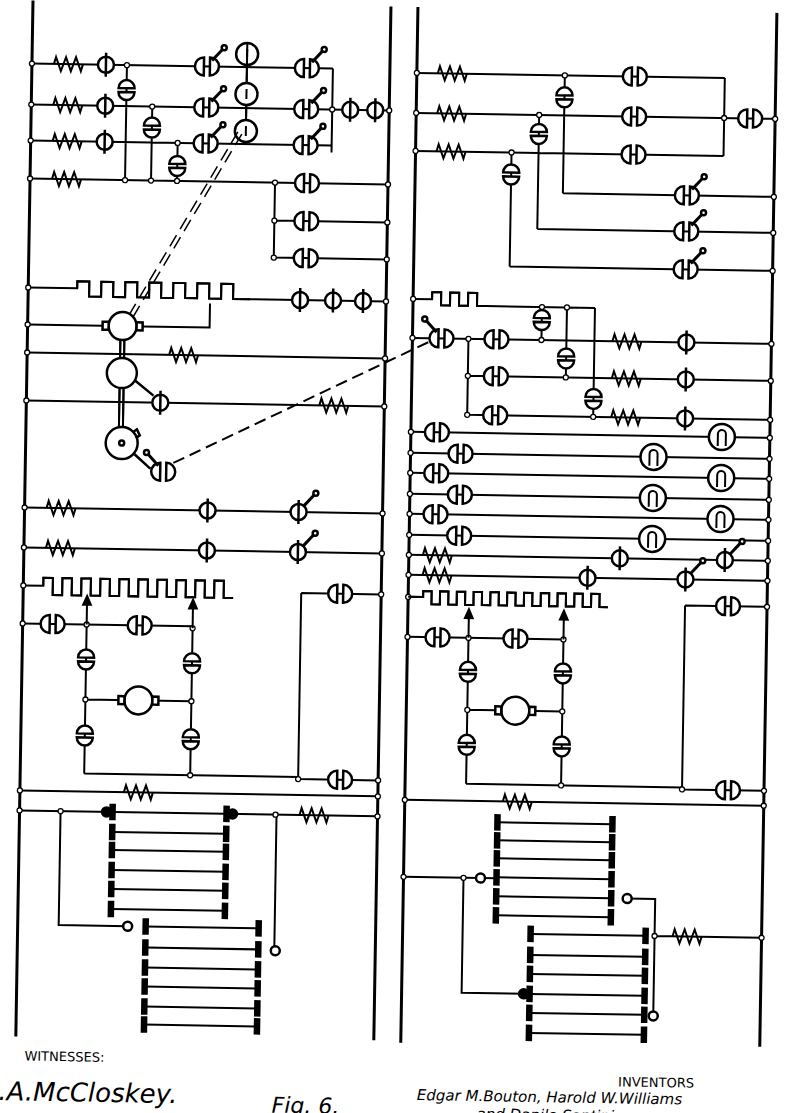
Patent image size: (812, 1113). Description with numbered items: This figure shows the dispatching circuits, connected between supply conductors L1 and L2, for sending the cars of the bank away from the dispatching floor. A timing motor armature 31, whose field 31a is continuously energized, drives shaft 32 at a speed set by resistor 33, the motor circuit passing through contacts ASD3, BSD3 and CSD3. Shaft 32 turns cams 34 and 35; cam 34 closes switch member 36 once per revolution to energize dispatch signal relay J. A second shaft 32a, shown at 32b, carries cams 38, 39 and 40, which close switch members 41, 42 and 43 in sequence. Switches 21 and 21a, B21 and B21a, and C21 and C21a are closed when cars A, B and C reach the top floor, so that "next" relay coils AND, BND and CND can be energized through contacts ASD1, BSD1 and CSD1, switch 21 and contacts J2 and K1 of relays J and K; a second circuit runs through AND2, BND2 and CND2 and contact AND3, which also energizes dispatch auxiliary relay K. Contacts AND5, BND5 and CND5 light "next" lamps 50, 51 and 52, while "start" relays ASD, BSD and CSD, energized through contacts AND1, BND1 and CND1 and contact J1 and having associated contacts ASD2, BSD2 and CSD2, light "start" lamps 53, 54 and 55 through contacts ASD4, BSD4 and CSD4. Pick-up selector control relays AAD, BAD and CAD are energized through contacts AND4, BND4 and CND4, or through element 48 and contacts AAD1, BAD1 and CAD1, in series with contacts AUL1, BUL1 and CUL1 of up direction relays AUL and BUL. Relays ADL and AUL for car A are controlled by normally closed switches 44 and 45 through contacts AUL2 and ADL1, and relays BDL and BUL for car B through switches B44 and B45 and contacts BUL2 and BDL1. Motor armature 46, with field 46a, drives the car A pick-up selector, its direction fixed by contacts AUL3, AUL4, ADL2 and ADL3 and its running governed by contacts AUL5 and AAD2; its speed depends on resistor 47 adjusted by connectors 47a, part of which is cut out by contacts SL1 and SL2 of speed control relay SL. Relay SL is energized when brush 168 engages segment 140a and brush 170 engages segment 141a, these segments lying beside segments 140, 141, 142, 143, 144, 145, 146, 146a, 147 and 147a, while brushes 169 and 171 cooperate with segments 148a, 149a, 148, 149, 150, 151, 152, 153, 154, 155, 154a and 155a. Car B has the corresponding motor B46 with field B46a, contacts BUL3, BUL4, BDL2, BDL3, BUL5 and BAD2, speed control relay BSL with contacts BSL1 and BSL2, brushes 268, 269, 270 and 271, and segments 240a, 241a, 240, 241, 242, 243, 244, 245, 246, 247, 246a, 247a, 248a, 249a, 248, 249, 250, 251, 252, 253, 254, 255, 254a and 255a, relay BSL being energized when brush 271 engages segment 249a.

The supply line L1 is at (229, 526).
The supply line L2 is at (553, 533).
The switch 21 is at (311, 58).
The motor 31 is at (132, 323).
The resistor 31a is at (198, 351).
The shaft 32 is at (122, 350).
The connection 32a is at (185, 225).
The shaft 32b is at (266, 94).
The coil 33 is at (164, 280).
The cam 34 is at (110, 376).
The cam 35 is at (112, 441).
The contact 36 is at (174, 398).
The dial 38 is at (256, 126).
The dial 39 is at (256, 90).
The dial 40 is at (250, 38).
The switch 41 is at (199, 136).
The switch 42 is at (195, 100).
The switch 43 is at (204, 58).
The switch 44 is at (291, 504).
The switch 45 is at (286, 545).
The motor 46 is at (138, 692).
The resistor 46a is at (153, 790).
The coil 47 is at (138, 579).
The armature 47a is at (155, 612).
The coil 48 is at (510, 441).
The relay 50 is at (736, 437).
The relay 51 is at (667, 457).
The relay 52 is at (736, 478).
The relay 53 is at (667, 498).
The relay 54 is at (735, 519).
The relay 55 is at (666, 539).
The contact 140 is at (93, 833).
The contact 140a is at (92, 816).
The contact 141 is at (243, 835).
The contact 141a is at (250, 819).
The contact 142 is at (93, 852).
The contact 143 is at (241, 853).
The contact 144 is at (91, 872).
The contact 145 is at (240, 873).
The contact 146 is at (91, 891).
The contact 146a is at (90, 911).
The contact 147 is at (241, 892).
The contact 147a is at (244, 912).
The contact 148 is at (126, 944).
The contact 148a is at (165, 923).
The contact 149 is at (237, 945).
The contact 149a is at (250, 924).
The contact 150 is at (122, 964).
The contact 151 is at (277, 965).
The contact 152 is at (124, 984).
The contact 153 is at (275, 984).
The contact 154 is at (121, 1003).
The contact 154a is at (118, 1021).
The contact 155 is at (275, 1003).
The contact 155a is at (279, 1022).
The contact arm 168 is at (91, 805).
The contact arm 169 is at (102, 931).
The contact arm 170 is at (248, 808).
The contact arm 171 is at (290, 947).
The contact 240 is at (472, 840).
The contact 240a is at (472, 823).
The contact 241 is at (627, 842).
The contact 241a is at (631, 823).
The contact 242 is at (472, 858).
The contact 243 is at (627, 860).
The contact 244 is at (479, 876).
The contact 245 is at (627, 878).
The contact 246 is at (511, 895).
The contact 246a is at (533, 922).
The contact 247 is at (627, 896).
The contact 247a is at (582, 915).
The contact 248 is at (505, 954).
The contact 248a is at (505, 935).
The contact 249 is at (620, 954).
The contact 249a is at (631, 926).
The contact 250 is at (505, 972).
The contact 251 is at (622, 973).
The contact 252 is at (504, 990).
The contact 253 is at (622, 993).
The contact 254 is at (501, 1017).
The contact 254a is at (499, 1036).
The contact 255 is at (619, 1012).
The contact 255a is at (618, 1032).
The contact arm 268 is at (450, 875).
The contact arm 269 is at (501, 1001).
The contact arm 270 is at (650, 894).
The contact arm 271 is at (675, 1016).
The resistor J is at (334, 415).
The contact J1 is at (749, 113).
The contact J2 is at (348, 102).
The resistor K is at (67, 169).
The contact K1 is at (376, 102).
The resistor SL is at (314, 830).
The contact SL1 is at (50, 616).
The contact SL2 is at (143, 616).
The resistor BSL is at (686, 928).
The contact BSL1 is at (433, 630).
The contact BSL2 is at (508, 632).
The resistor AND is at (62, 52).
The resistor BND is at (61, 95).
The resistor CND is at (60, 133).
The contact ASD1 is at (115, 56).
The contact BSD1 is at (96, 99).
The contact CSD1 is at (95, 135).
The relay AND2 is at (147, 88).
The relay BND2 is at (244, 171).
The relay CND2 is at (239, 211).
The contact AND3 is at (315, 177).
The contact ASD3 is at (286, 293).
The contact BSD3 is at (321, 307).
The contact CSD3 is at (353, 294).
The switch B21 is at (304, 102).
The switch C21 is at (303, 139).
The resistor ADL is at (61, 499).
The resistor AUL is at (60, 540).
The contact AUL2 is at (199, 503).
The contact ADL1 is at (197, 543).
The relay AUL3 is at (61, 659).
The relay ADL2 is at (213, 663).
The relay ADL3 is at (61, 737).
The relay AUL4 is at (212, 740).
The contact AUL5 is at (331, 770).
The contact AAD2 is at (331, 586).
The resistor ASD is at (454, 65).
The resistor BSD is at (452, 104).
The resistor CSD is at (449, 145).
The contact AND1 is at (639, 71).
The contact BND1 is at (637, 111).
The contact CND1 is at (628, 150).
The relay ASD2 is at (540, 97).
The relay BSD2 is at (516, 134).
The relay CSD2 is at (483, 176).
The switch 21a is at (679, 188).
The switch B21a is at (675, 224).
The switch C21a is at (670, 263).
The relay AAD1 is at (529, 308).
The relay BAD1 is at (547, 364).
The relay CAD1 is at (564, 402).
The contact AND4 is at (491, 331).
The contact BND4 is at (495, 370).
The contact CND4 is at (492, 409).
The resistor AAD is at (626, 331).
The resistor BAD is at (627, 369).
The resistor CAD is at (626, 408).
The contact AUL1 is at (696, 334).
The contact BUL1 is at (699, 374).
The contact CUL1 is at (699, 412).
The contact AND5 is at (435, 428).
The contact BND5 is at (480, 452).
The contact CND5 is at (468, 473).
The contact ASD4 is at (479, 494).
The contact BSD4 is at (467, 514).
The contact CSD4 is at (479, 535).
The resistor BDL is at (458, 554).
The resistor BUL is at (454, 574).
The contact BUL2 is at (600, 556).
The contact BDL1 is at (565, 577).
The switch B44 is at (714, 555).
The switch B45 is at (671, 574).
The relay BUL3 is at (445, 675).
The relay BDL2 is at (583, 675).
The relay BDL3 is at (444, 748).
The relay BUL4 is at (582, 749).
The motor B46 is at (515, 699).
The resistor B46a is at (541, 799).
The contact BAD2 is at (717, 618).
The contact BUL5 is at (716, 785).